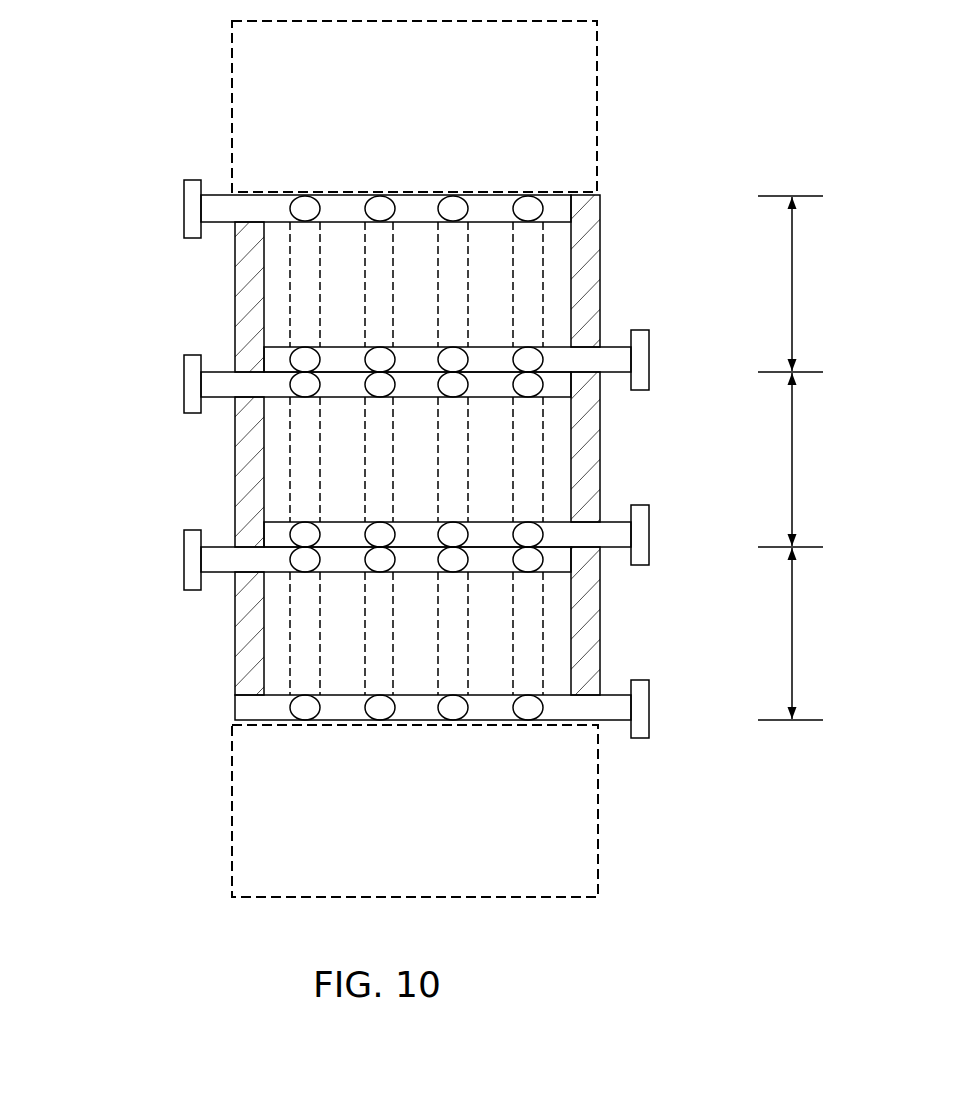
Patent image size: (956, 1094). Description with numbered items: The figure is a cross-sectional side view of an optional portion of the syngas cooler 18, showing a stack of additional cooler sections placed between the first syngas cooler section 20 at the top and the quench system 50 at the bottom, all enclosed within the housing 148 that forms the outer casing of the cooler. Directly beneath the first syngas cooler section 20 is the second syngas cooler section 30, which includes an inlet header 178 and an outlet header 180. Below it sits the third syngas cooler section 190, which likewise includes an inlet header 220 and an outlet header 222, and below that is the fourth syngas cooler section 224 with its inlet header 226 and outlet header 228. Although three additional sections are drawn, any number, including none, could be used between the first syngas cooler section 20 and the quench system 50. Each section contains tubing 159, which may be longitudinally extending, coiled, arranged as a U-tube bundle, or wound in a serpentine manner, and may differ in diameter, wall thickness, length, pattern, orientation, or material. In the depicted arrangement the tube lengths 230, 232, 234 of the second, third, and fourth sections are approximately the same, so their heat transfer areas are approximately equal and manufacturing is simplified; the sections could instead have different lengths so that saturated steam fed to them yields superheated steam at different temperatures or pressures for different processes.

The syngas cooler 18 is at (100, 535).
The first syngas cooler section 20 is at (600, 100).
The second syngas cooler section 30 is at (600, 213).
The quench system 50 is at (231, 808).
The housing 148 is at (600, 462).
The tubing 159 is at (360, 260).
The inlet header 178 is at (618, 346).
The outlet header 180 is at (217, 228).
The third syngas cooler section 190 is at (611, 448).
The inlet header 220 is at (622, 551).
The outlet header 222 is at (218, 370).
The fourth syngas cooler section 224 is at (611, 663).
The inlet header 226 is at (618, 722).
The outlet header 228 is at (218, 575).
The tube length 230 is at (790, 254).
The tube length 232 is at (790, 454).
The tube length 234 is at (790, 590).